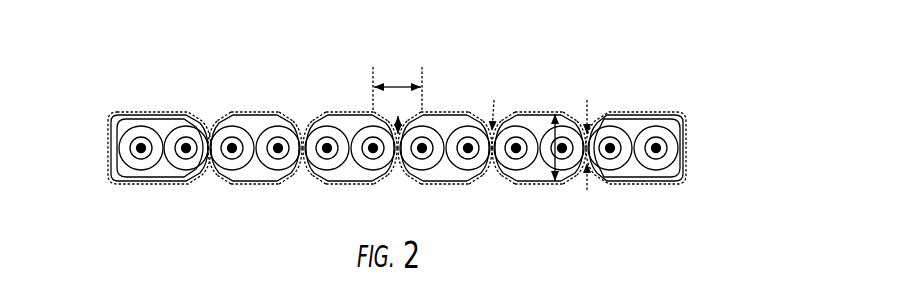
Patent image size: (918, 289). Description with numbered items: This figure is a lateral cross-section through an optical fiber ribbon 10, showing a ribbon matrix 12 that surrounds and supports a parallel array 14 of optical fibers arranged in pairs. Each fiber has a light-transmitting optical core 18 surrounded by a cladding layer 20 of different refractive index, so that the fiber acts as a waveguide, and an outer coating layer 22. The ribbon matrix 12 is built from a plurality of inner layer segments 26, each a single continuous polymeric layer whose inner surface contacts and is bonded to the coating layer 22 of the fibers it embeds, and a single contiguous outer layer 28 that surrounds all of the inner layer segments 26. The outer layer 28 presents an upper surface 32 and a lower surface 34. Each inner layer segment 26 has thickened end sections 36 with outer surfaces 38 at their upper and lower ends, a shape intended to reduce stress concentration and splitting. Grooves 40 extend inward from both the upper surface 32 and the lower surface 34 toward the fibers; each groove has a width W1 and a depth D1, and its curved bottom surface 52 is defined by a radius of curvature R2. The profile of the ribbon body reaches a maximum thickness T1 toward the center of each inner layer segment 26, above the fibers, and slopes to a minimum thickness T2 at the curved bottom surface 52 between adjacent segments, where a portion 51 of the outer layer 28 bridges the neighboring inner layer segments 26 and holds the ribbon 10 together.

The optical fiber ribbon 10 is at (712, 90).
The ribbon matrix 12 is at (706, 152).
The array 14 is at (110, 200).
The optical core 18 is at (184, 152).
The cladding layer 20 is at (398, 184).
The coating layer 22 is at (398, 178).
The inner layer segment 26 is at (398, 142).
The outer layer 28 is at (683, 113).
The upper surface 32 is at (535, 111).
The lower surface 34 is at (543, 185).
The thickened end section 36 is at (300, 170).
The outer surface 38 is at (293, 115).
The groove 40 is at (208, 111).
The portion of outer layer 51 is at (590, 160).
The curved bottom surface 52 is at (491, 166).
The groove width W1 is at (397, 85).
The groove depth D1 is at (393, 121).
The radius of curvature R2 is at (494, 100).
The maximum thickness T1 is at (552, 172).
The minimum thickness T2 is at (587, 102).